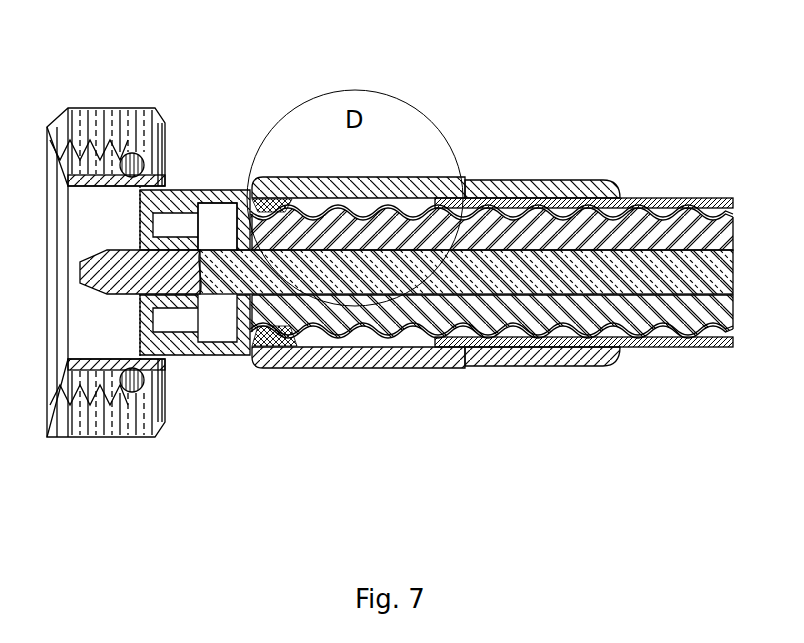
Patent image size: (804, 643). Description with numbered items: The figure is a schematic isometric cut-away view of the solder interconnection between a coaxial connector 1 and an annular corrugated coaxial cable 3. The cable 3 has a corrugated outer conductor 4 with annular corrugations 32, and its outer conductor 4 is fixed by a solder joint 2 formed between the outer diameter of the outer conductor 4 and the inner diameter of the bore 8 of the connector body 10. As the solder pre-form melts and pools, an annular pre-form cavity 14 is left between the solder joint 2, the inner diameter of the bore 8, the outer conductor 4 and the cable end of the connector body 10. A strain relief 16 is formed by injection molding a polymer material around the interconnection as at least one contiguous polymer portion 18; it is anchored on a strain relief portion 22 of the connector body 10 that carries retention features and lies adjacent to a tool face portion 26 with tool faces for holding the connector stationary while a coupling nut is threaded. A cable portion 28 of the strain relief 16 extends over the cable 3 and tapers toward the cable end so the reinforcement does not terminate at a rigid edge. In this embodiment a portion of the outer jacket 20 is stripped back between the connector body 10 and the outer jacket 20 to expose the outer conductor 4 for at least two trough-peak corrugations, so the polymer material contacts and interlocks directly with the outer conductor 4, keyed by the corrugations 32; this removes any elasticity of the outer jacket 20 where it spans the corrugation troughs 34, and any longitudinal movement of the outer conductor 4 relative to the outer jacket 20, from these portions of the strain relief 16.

The coaxial connector 1 is at (203, 190).
The solder joint 2 is at (270, 337).
The coaxial cable 3 is at (677, 200).
The outer conductor 4 is at (697, 212).
The bore 8 is at (218, 223).
The connector body 10 is at (220, 350).
The pre-form cavity 14 is at (318, 337).
The strain relief 16 is at (513, 182).
The contiguous polymer portion 18 is at (485, 365).
The outer jacket 20 is at (648, 345).
The strain relief portion 22 is at (348, 343).
The tool face portion 26 is at (223, 200).
The cable portion 28 is at (568, 366).
The corrugations 32 is at (700, 327).
The corrugation troughs 34 is at (655, 210).